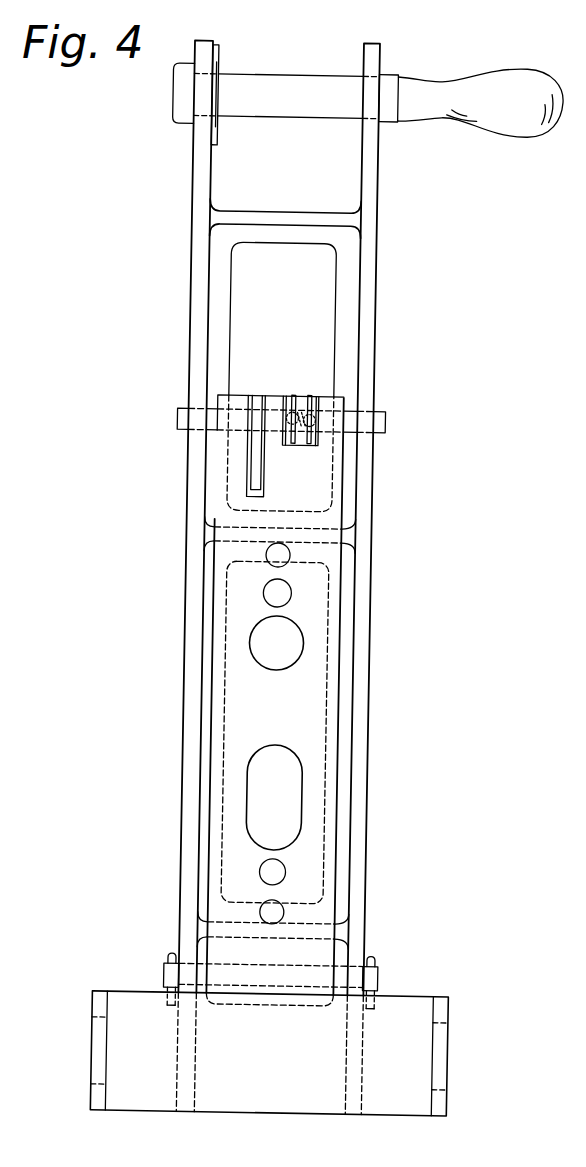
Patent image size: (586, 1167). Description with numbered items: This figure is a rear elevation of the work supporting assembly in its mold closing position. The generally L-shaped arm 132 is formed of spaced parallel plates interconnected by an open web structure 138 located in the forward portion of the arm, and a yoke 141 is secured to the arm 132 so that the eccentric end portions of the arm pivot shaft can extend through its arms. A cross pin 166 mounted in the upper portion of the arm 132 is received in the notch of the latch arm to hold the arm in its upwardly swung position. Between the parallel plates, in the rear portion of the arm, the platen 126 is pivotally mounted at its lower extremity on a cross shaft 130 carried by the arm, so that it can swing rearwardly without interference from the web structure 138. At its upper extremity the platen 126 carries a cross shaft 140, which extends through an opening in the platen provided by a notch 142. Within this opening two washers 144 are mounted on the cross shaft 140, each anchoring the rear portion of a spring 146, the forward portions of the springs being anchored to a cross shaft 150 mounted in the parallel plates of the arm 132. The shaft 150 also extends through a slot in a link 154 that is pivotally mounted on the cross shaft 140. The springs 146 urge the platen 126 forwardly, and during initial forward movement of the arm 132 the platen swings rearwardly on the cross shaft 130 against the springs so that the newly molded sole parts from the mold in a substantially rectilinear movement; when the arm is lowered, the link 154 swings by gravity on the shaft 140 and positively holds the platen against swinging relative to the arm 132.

The platen 126 is at (335, 621).
The cross shaft 130 is at (374, 961).
The arm 132 is at (357, 772).
The open web structure 138 is at (341, 318).
The cross shaft 140 is at (301, 408).
The yoke 141 is at (414, 1023).
The notch 142 is at (319, 396).
The washers 144 is at (293, 444).
The spring 146 is at (282, 418).
The cross shaft 150 is at (385, 423).
The link 154 is at (258, 450).
The cross pin 166 is at (286, 108).